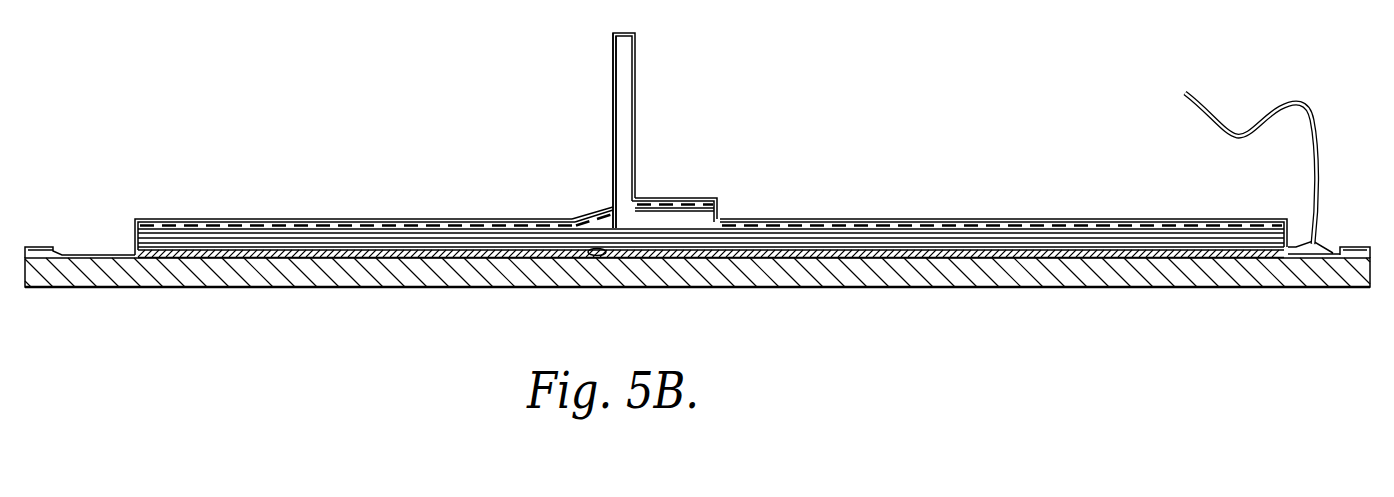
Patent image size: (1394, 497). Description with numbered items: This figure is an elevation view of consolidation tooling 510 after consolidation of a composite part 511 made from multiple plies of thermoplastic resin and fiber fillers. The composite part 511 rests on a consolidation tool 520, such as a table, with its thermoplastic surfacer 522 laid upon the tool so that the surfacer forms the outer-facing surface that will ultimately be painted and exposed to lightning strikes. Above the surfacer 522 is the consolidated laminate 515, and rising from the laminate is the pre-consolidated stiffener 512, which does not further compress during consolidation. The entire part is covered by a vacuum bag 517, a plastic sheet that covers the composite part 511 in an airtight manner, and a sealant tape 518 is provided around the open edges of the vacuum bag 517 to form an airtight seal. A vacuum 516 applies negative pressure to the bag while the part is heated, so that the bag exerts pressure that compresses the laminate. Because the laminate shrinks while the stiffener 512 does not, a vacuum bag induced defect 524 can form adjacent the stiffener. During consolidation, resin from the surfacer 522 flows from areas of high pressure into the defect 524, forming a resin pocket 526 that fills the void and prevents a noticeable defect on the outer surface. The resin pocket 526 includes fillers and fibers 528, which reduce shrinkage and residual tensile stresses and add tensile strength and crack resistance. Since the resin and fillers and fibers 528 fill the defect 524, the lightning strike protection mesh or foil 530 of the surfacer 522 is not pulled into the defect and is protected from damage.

The consolidation tooling 510 is at (238, 76).
The composite part 511 is at (413, 175).
The pre-consolidated stiffener 512 is at (623, 115).
The consolidated laminate 515 is at (798, 238).
The vacuum 516 is at (1197, 100).
The vacuum bag 517 is at (612, 140).
The sealant tape 518 is at (42, 250).
The consolidation tool 520 is at (765, 272).
The thermoplastic surfacer 522 is at (320, 252).
The vacuum bag induced defect 524 is at (600, 250).
The resin pocket 526 is at (623, 250).
The fillers and fibers 528 is at (594, 256).
The lightning strike protection mesh or foil 530 is at (900, 258).